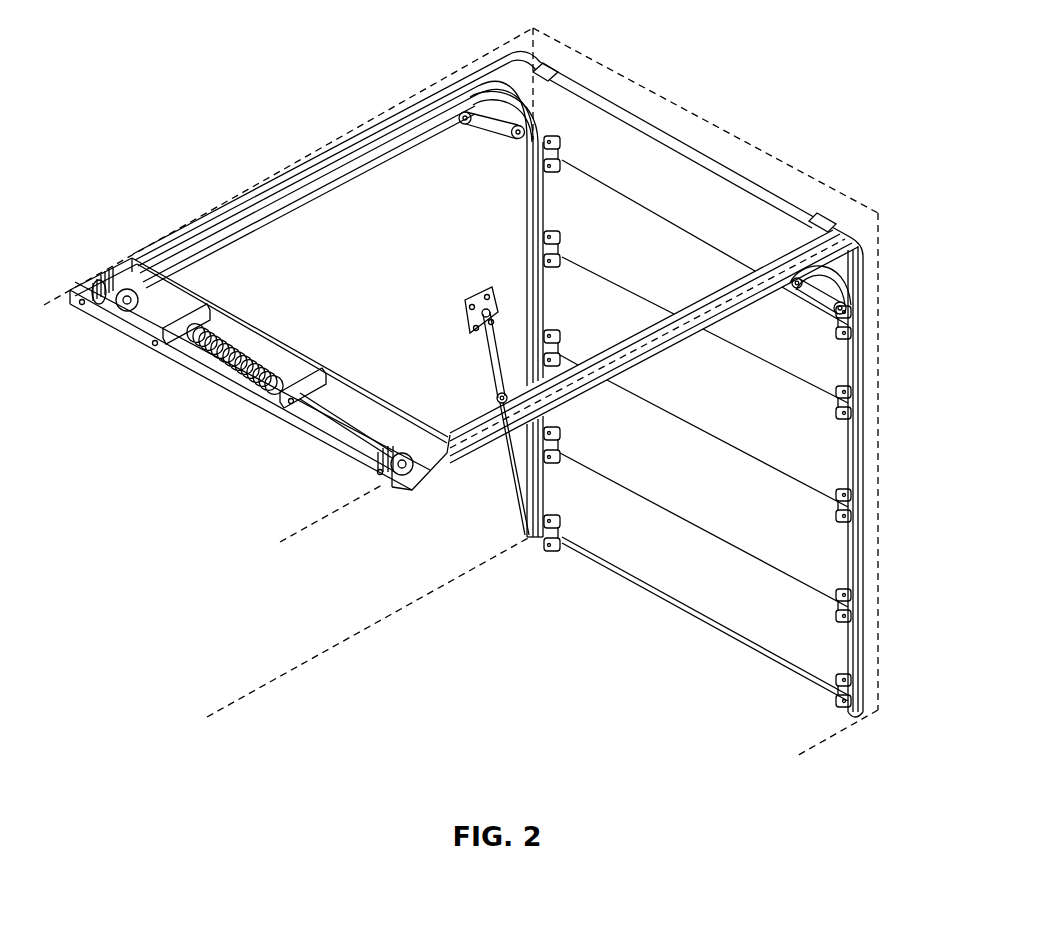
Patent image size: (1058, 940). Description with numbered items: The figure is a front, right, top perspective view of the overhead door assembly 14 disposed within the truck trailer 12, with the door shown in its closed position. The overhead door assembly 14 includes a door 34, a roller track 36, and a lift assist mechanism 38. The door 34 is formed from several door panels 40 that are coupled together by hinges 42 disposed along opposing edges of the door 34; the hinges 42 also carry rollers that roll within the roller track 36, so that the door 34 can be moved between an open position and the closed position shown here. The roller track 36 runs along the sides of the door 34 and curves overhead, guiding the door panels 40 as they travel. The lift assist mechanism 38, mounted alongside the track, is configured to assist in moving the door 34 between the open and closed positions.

The door assembly 12 is at (547, 439).
The overhead door assembly 14 is at (246, 113).
The door 34 is at (676, 474).
The roller track 36 is at (840, 277).
The lift assist mechanism 38 is at (211, 409).
The door panels 40 is at (802, 345).
The hinges 42 is at (856, 324).